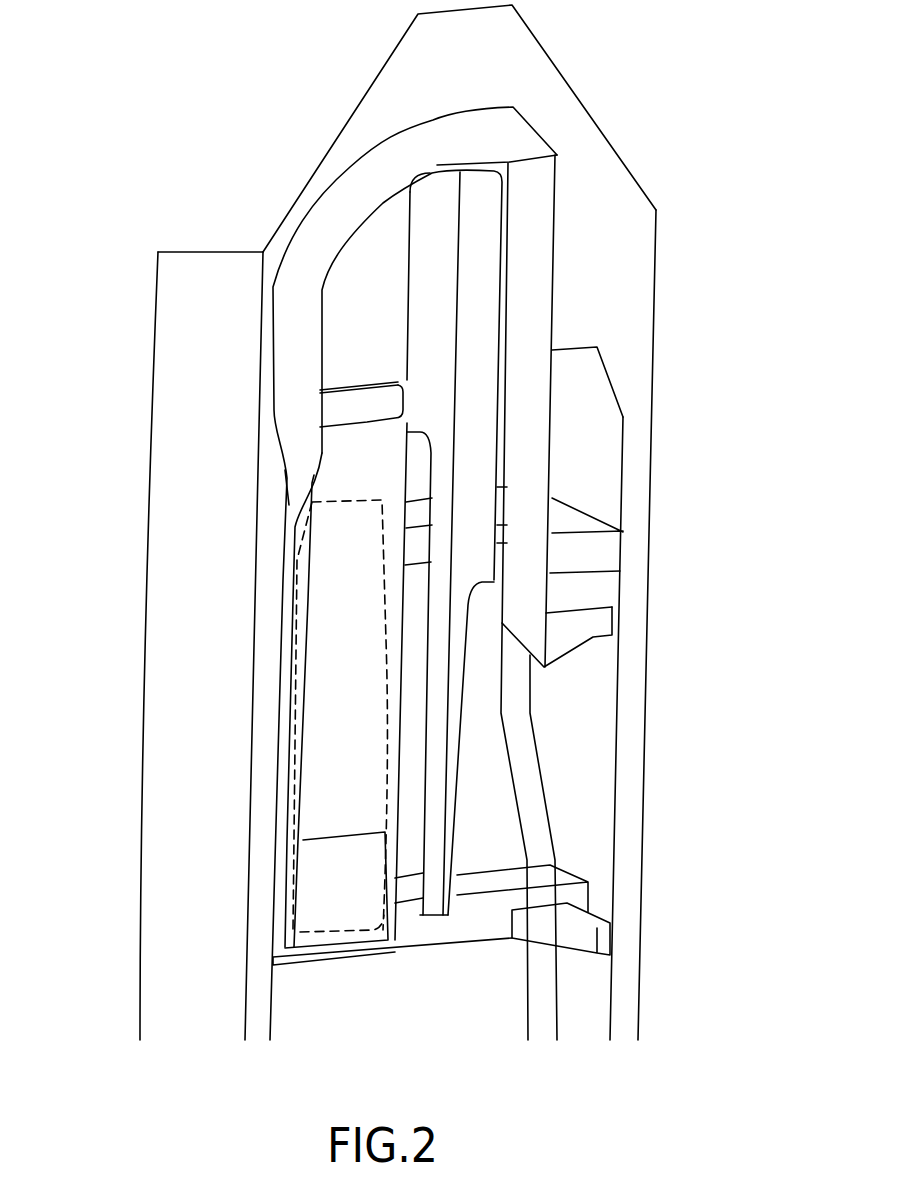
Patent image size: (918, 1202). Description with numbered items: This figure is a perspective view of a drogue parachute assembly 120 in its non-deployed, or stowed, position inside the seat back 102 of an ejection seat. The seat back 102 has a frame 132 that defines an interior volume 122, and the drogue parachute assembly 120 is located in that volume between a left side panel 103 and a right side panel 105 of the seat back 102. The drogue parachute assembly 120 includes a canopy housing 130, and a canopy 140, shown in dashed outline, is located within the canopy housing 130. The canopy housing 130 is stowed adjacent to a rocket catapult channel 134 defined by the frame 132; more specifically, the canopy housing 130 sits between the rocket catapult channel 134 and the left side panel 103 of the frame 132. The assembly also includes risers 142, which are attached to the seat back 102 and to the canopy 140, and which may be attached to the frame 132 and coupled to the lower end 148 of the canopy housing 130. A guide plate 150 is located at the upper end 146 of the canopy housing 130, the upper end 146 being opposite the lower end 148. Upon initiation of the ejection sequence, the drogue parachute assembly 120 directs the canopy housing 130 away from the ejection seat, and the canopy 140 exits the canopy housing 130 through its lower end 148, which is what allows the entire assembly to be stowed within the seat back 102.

The seat back 102 is at (177, 98).
The left side panel 103 is at (257, 1030).
The right side panel 105 is at (625, 772).
The drogue parachute assembly 120 is at (275, 638).
The interior volume 122 is at (368, 334).
The canopy housing 130 is at (340, 470).
The frame 132 is at (512, 57).
The rocket catapult channel 134 is at (483, 302).
The canopy 140 is at (337, 733).
The risers 142 is at (345, 223).
The upper end 146 is at (365, 424).
The lower end 148 is at (368, 943).
The guide plate 150 is at (332, 413).